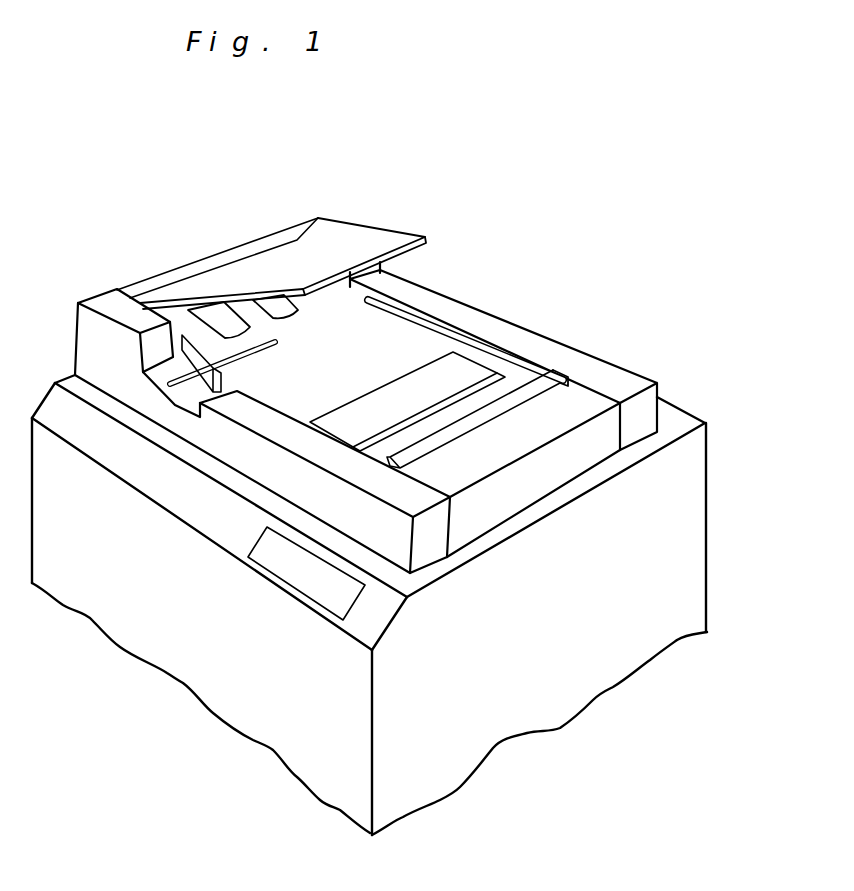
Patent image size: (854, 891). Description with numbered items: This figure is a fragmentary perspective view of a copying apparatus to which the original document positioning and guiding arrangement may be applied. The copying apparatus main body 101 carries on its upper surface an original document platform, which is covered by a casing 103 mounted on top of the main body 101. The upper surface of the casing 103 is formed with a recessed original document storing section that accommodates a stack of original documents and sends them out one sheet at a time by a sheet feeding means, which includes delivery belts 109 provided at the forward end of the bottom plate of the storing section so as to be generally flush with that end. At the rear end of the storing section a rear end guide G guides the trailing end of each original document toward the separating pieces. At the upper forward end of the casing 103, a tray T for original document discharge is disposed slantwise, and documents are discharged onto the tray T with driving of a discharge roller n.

The copying apparatus main body 101 is at (665, 578).
The casing 103 is at (617, 365).
The delivery belts 109 is at (240, 334).
The discharge roller n is at (190, 283).
The tray T is at (385, 247).
The rear end guide G is at (567, 372).